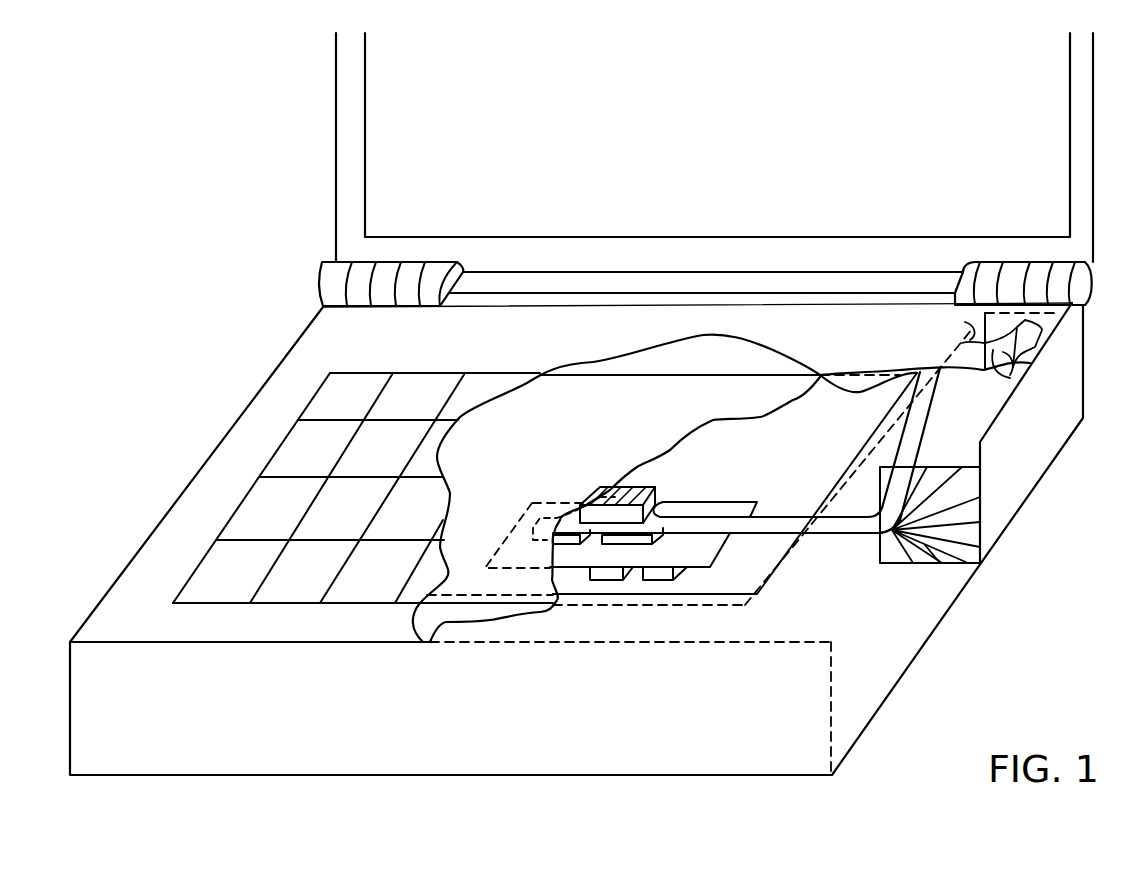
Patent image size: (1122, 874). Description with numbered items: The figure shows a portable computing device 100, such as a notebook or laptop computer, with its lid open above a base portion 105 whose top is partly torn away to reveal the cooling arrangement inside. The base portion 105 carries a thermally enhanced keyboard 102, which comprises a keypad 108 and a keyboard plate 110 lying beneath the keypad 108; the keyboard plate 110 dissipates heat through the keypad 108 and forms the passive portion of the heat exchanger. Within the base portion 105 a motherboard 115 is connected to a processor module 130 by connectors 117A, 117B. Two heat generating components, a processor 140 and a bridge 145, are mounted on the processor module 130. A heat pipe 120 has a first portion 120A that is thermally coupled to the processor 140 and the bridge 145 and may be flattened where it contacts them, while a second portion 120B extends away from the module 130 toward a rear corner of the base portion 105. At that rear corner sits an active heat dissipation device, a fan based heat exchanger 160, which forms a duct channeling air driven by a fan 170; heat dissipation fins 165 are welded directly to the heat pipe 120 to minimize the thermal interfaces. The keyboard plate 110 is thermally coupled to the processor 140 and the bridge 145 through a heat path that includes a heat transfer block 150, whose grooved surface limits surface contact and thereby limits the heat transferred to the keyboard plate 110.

The portable computing device 100 is at (252, 253).
The thermally enhanced keyboard (TEK) 102 is at (534, 364).
The base portion 105 is at (576, 539).
The keypad 108 is at (363, 390).
The keyboard plate 110 is at (757, 612).
The motherboard 115 is at (780, 593).
The connector 117A is at (606, 580).
The connector 117B is at (670, 580).
The heat pipe 120 is at (777, 517).
The first portion of heat pipe 120A is at (567, 503).
The second portion of heat pipe 120B is at (887, 506).
The processor module 130 is at (737, 502).
The processor 140 is at (631, 546).
The bridge 145 is at (564, 546).
The heat transfer block 150 is at (680, 478).
The fan based heat exchanger 160 is at (928, 360).
The heat dissipation fins 165 is at (943, 550).
The fan 170 is at (977, 329).